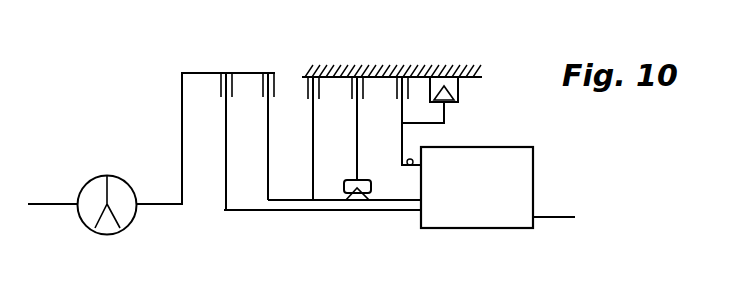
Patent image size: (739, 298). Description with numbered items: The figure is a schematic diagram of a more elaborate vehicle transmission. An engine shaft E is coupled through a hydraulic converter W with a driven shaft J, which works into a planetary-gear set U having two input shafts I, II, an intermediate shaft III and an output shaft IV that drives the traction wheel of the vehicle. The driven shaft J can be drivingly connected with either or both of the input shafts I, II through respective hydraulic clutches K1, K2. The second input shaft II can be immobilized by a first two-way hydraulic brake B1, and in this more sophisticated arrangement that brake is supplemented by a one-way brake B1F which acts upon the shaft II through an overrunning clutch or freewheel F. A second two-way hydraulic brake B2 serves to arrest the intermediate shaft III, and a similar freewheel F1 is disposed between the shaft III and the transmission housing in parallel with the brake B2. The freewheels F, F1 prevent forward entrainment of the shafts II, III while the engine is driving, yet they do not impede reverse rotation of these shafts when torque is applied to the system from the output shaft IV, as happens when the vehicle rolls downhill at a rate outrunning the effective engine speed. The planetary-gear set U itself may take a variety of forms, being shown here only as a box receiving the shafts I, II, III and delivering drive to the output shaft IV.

The engine shaft E is at (50, 204).
The hydraulic converter W is at (102, 182).
The driven shaft J is at (157, 204).
The hydraulic clutch K1 is at (228, 73).
The hydraulic clutch K2 is at (270, 73).
The two-way hydraulic brake B1 is at (315, 77).
The one-way brake B1F is at (359, 77).
The two-way hydraulic brake B2 is at (404, 77).
The freewheel F1 is at (443, 80).
The freewheel F is at (358, 197).
The input shaft I is at (245, 211).
The input shaft II is at (298, 201).
The intermediate shaft III is at (411, 167).
The output shaft IV is at (552, 212).
The planetary-gear set U is at (477, 187).